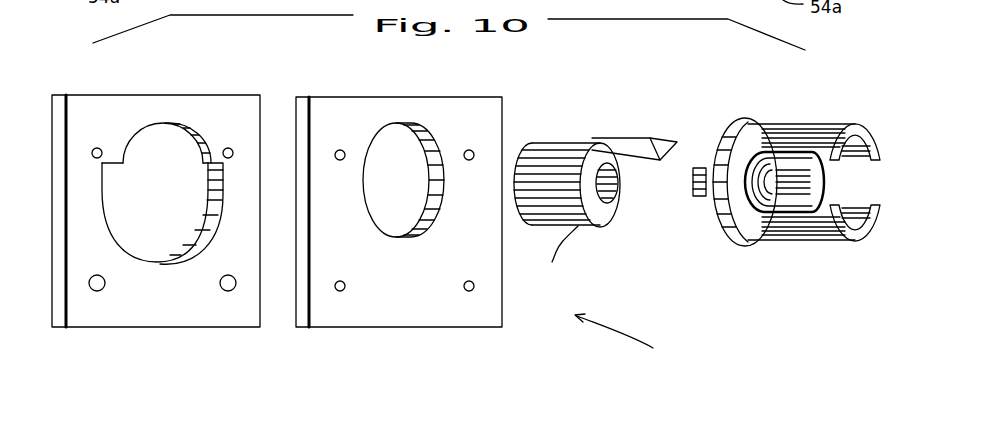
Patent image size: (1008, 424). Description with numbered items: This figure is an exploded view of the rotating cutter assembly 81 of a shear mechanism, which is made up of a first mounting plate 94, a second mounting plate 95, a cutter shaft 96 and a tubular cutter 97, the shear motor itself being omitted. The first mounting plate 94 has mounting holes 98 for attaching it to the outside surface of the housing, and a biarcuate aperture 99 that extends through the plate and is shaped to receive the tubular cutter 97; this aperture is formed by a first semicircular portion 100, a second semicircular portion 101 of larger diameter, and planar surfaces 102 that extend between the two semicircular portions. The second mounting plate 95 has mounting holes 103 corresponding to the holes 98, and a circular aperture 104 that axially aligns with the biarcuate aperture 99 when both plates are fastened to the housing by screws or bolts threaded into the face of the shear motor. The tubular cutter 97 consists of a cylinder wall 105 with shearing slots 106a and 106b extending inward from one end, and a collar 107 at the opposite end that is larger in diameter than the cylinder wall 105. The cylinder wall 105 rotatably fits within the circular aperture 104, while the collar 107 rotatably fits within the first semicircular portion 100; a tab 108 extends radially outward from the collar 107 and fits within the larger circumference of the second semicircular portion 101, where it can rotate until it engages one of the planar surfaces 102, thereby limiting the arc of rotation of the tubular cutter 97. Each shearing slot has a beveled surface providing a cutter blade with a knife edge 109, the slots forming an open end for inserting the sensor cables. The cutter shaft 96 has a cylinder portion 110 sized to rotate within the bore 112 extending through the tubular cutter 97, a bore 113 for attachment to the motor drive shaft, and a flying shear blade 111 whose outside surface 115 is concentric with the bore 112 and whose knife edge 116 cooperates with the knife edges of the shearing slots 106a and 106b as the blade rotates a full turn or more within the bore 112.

The rotating cutter assembly 81 is at (631, 340).
The first mounting plate 94 is at (175, 317).
The second mounting plate 95 is at (368, 108).
The cutter shaft 96 is at (527, 163).
The tubular cutter 97 is at (788, 207).
The mounting holes 98 is at (229, 148).
The biarcuate aperture 99 is at (152, 213).
The first semicircular portion 100 is at (137, 150).
The second semicircular portion 101 is at (225, 197).
The planar surfaces 102 is at (195, 170).
The mounting holes 103 is at (342, 150).
The circular aperture 104 is at (400, 207).
The cylinder wall 105 is at (813, 125).
The shearing slot 106a is at (800, 213).
The shearing slot 106b is at (872, 207).
The collar 107 is at (735, 130).
The tab 108 is at (694, 197).
The knife edge 109 is at (847, 163).
The cylinder portion 110 is at (565, 137).
The flying shear blade 111 is at (667, 142).
The bore 112 is at (858, 128).
The bore 113 is at (610, 185).
The outside surface 115 is at (628, 138).
The knife edge 116 is at (645, 163).